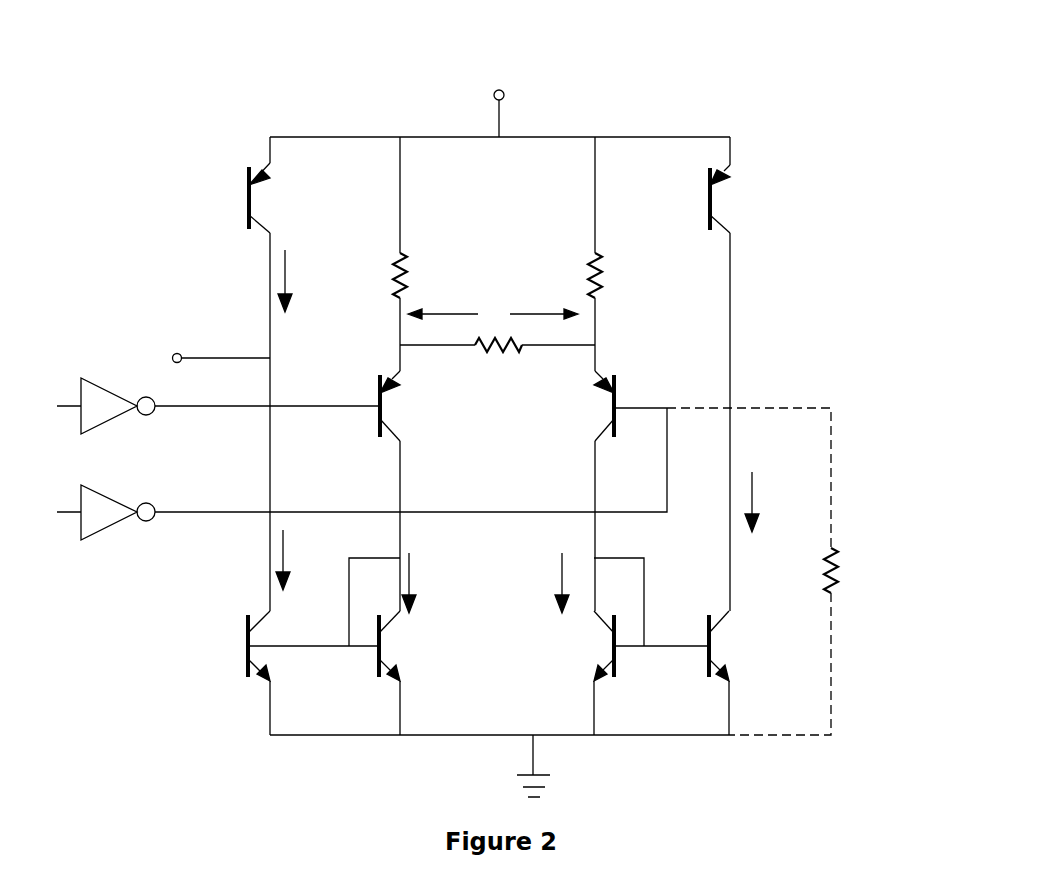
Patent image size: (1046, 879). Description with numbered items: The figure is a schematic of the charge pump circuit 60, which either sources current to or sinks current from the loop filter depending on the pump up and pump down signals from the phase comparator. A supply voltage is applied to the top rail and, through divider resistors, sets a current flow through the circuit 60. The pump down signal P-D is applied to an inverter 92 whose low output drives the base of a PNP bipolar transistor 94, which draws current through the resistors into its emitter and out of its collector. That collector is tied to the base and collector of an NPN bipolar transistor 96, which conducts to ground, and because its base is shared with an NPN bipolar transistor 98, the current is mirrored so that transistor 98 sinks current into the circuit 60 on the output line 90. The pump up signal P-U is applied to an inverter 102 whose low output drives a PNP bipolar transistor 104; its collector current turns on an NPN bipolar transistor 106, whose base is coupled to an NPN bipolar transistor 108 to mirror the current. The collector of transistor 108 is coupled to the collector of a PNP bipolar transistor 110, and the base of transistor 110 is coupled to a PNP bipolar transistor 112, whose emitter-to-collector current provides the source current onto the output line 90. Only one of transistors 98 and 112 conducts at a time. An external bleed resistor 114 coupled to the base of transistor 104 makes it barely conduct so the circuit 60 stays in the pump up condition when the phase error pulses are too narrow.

The charge pump circuit 60 is at (702, 56).
The output line 90 is at (204, 353).
The inverter 92 is at (105, 390).
The PNP bipolar transistor 94 is at (378, 432).
The NPN bipolar transistor 96 is at (383, 647).
The NPN bipolar transistor 98 is at (245, 640).
The inverter 102 is at (108, 497).
The PNP bipolar transistor 104 is at (617, 400).
The NPN bipolar transistor 106 is at (611, 644).
The NPN bipolar transistor 108 is at (708, 639).
The PNP bipolar transistor 110 is at (714, 200).
The PNP bipolar transistor 112 is at (245, 185).
The external bleed resistor 114 is at (838, 567).